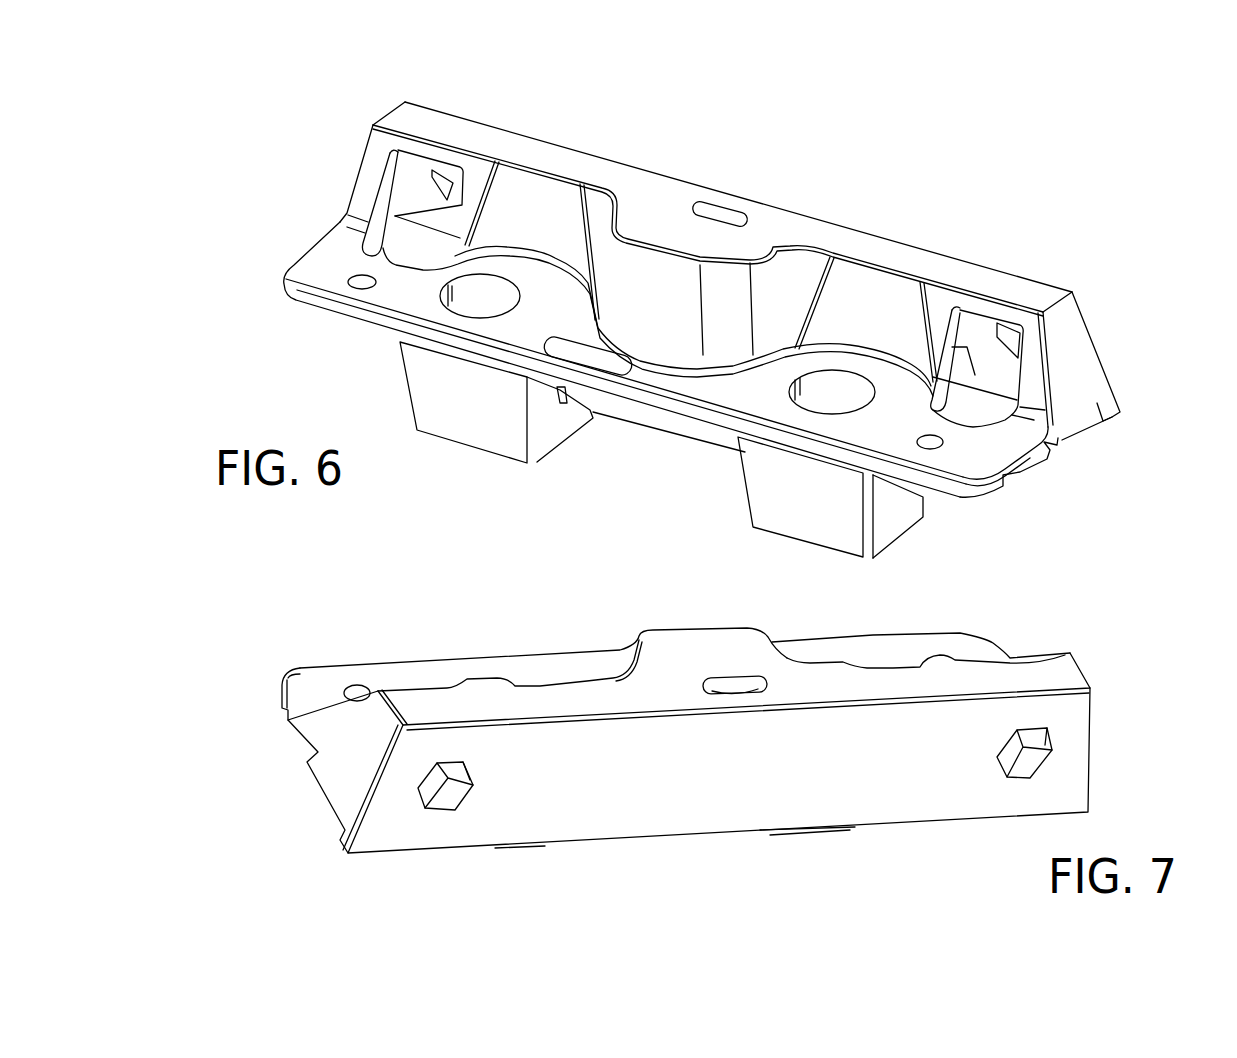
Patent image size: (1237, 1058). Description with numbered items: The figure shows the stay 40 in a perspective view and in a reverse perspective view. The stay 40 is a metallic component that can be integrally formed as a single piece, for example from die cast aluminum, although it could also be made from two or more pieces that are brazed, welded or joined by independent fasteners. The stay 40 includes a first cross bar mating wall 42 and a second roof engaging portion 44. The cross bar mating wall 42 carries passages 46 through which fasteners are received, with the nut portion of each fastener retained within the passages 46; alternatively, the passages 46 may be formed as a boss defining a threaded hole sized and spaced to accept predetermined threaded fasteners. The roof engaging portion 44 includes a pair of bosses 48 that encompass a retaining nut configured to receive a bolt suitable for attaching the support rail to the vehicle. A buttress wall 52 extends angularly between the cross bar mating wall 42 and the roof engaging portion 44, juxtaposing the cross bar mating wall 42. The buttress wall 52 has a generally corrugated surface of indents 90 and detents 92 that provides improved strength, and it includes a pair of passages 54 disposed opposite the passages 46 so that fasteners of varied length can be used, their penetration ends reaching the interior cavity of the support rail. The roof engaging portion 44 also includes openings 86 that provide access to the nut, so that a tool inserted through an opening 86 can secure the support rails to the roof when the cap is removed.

In FIG. 6, the stay 40 is at (920, 222).
In FIG. 7, the stay 40 is at (386, 647).
In FIG. 6, the cross bar mating wall 42 is at (417, 108).
In FIG. 7, the cross bar mating wall 42 is at (625, 840).
In FIG. 6, the roof engaging portion 44 is at (360, 335).
In FIG. 7, the roof engaging portion 44 is at (618, 787).
In FIG. 7, the passages 46 is at (437, 808).
In FIG. 6, the bosses 48 is at (470, 418).
In FIG. 6, the buttress wall 52 is at (641, 302).
In FIG. 6, the passages 54 is at (425, 182).
In FIG. 6, the openings 86 is at (495, 298).
In FIG. 6, the indents 90 is at (538, 195).
In FIG. 6, the detents 92 is at (645, 202).